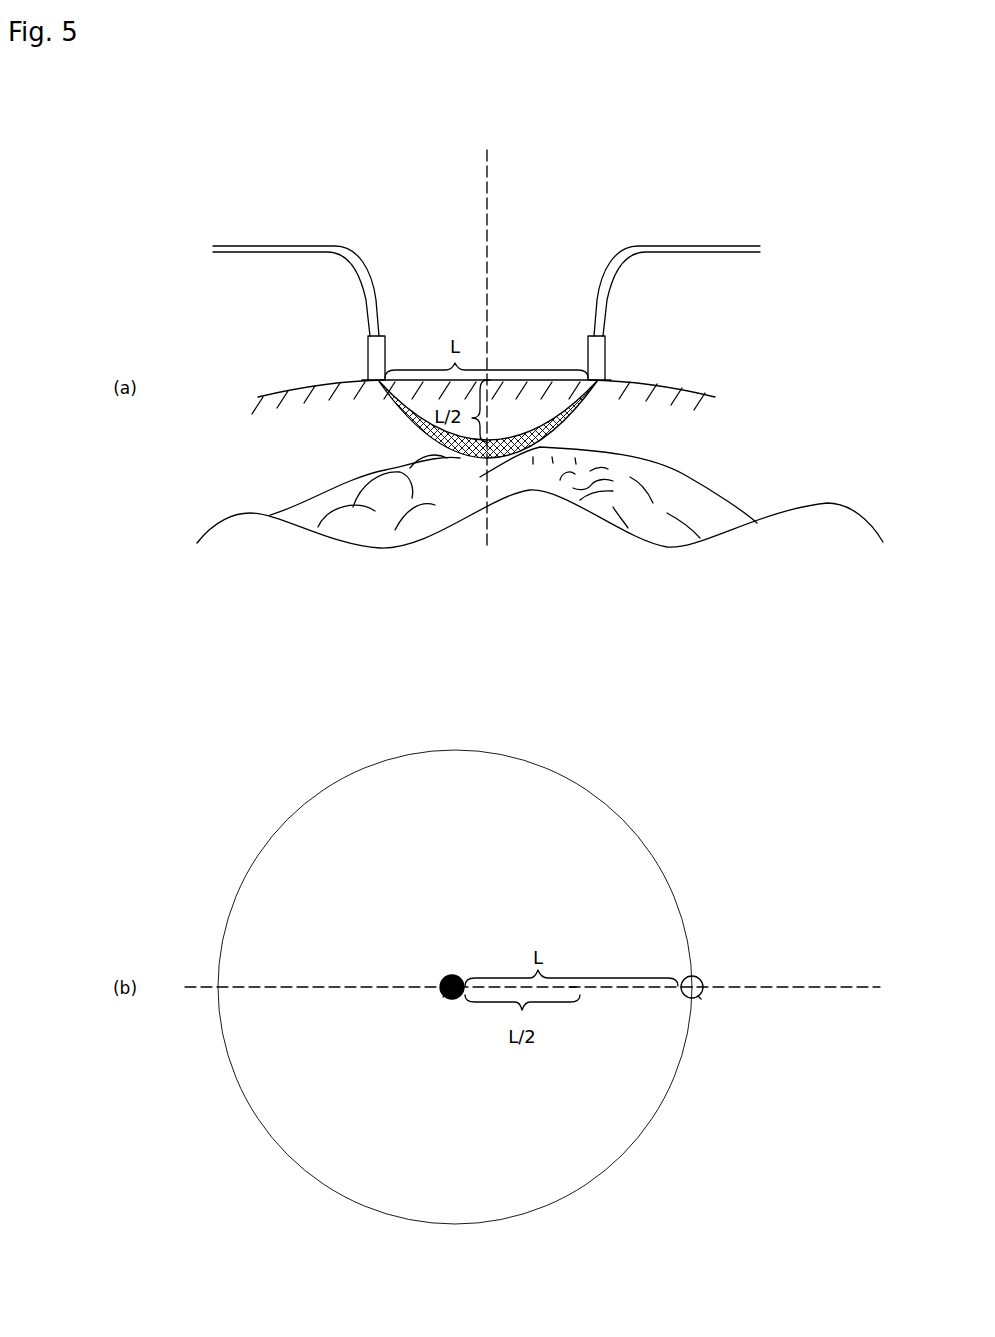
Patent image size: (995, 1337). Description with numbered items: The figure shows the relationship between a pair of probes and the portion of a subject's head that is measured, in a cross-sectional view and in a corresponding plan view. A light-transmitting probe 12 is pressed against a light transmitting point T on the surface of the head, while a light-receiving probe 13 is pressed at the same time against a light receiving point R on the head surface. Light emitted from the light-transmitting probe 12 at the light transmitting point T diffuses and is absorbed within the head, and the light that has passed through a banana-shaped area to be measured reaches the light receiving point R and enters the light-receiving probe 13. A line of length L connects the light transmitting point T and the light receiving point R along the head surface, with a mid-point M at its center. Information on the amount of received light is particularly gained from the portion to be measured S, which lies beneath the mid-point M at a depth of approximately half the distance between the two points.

The light-transmitting probe 12 is at (367, 350).
The light-receiving probe 13 is at (606, 348).
The light transmitting point T is at (360, 378).
The light receiving point R is at (606, 378).
The mid-point M is at (492, 375).
The portion to be measured S is at (495, 459).